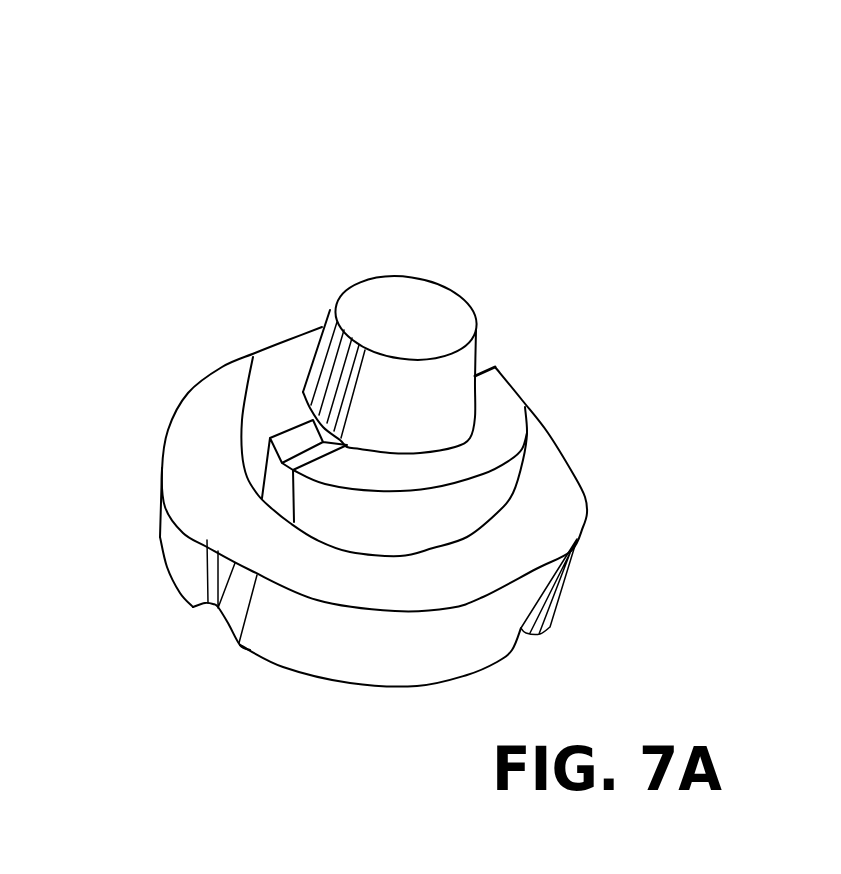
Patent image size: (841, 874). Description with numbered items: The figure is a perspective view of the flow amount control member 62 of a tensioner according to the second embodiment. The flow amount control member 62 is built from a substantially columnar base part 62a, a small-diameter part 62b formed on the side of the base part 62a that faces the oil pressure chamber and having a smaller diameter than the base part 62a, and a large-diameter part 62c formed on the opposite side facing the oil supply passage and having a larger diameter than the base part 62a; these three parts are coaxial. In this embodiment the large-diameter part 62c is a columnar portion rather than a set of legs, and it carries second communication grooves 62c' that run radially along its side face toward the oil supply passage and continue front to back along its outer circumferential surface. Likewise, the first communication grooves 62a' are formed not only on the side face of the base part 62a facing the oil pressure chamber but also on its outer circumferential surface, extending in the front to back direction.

The flow amount control member 62 is at (207, 125).
The base part 62a is at (488, 456).
The first communication grooves 62a' is at (206, 348).
The small-diameter part 62b is at (427, 388).
The large-diameter part 62c is at (445, 507).
The second communication grooves 62c' is at (147, 658).